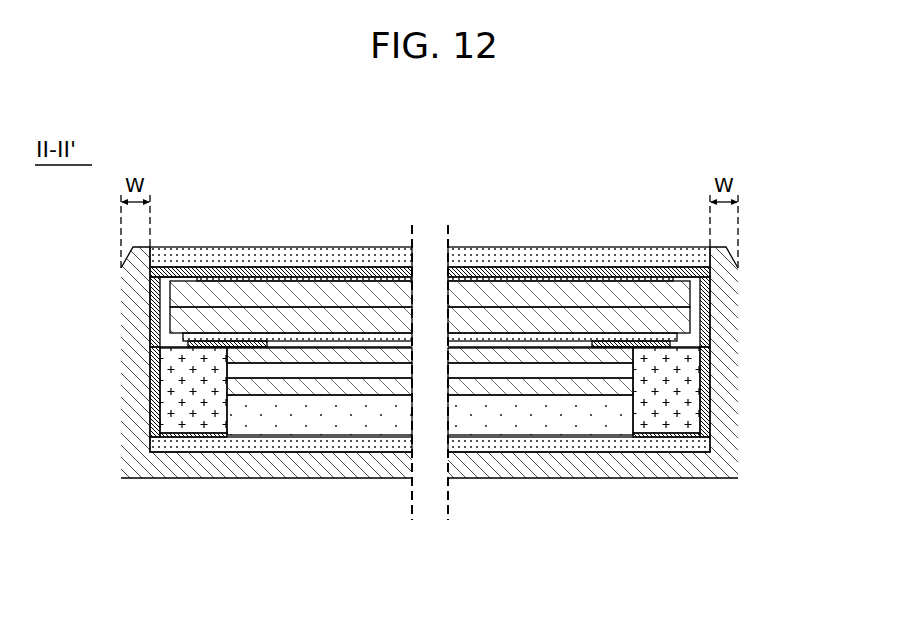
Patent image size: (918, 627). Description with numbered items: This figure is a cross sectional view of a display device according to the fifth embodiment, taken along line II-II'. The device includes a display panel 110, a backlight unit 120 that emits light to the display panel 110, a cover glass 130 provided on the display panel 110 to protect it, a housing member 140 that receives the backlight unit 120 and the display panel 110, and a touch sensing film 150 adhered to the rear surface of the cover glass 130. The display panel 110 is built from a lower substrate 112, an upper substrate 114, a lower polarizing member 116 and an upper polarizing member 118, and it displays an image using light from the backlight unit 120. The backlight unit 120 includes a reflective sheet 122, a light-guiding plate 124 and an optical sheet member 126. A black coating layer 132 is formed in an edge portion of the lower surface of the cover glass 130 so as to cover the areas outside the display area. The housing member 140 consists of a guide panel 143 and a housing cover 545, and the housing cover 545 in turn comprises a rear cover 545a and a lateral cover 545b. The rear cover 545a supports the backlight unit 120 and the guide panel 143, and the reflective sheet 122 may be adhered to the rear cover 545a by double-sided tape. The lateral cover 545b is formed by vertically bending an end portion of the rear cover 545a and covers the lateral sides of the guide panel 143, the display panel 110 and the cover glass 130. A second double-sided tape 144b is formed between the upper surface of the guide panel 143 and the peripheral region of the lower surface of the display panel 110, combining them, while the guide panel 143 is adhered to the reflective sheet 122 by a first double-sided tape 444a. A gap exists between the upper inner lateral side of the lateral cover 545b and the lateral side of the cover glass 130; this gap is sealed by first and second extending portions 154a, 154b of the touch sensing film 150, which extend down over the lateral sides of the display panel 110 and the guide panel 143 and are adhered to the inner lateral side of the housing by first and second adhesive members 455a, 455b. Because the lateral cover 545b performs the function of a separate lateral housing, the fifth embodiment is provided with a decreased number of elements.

The display panel 110 is at (430, 247).
The lower substrate 112 is at (353, 323).
The upper substrate 114 is at (312, 297).
The lower polarizing member 116 is at (390, 337).
The upper polarizing member 118 is at (268, 277).
The backlight unit 120 is at (430, 472).
The reflective sheet 122 is at (587, 450).
The light-guiding plate 124 is at (545, 413).
The optical sheet member 126 is at (485, 357).
The cover glass 130 is at (223, 252).
The black coating layer 132 is at (183, 267).
The housing member 140 is at (394, 432).
The guide panel 143 is at (203, 398).
The second double-sided tape 144b is at (670, 346).
The touch sensing film 150 is at (507, 270).
The first extending portion 154a is at (153, 320).
The second extending portion 154b is at (710, 302).
The first double-sided tape 444a is at (655, 437).
The first adhesive member 455a is at (152, 362).
The second adhesive member 455b is at (710, 375).
The housing cover 545 is at (394, 411).
The rear cover 545a is at (428, 497).
The lateral cover 545b is at (130, 403).